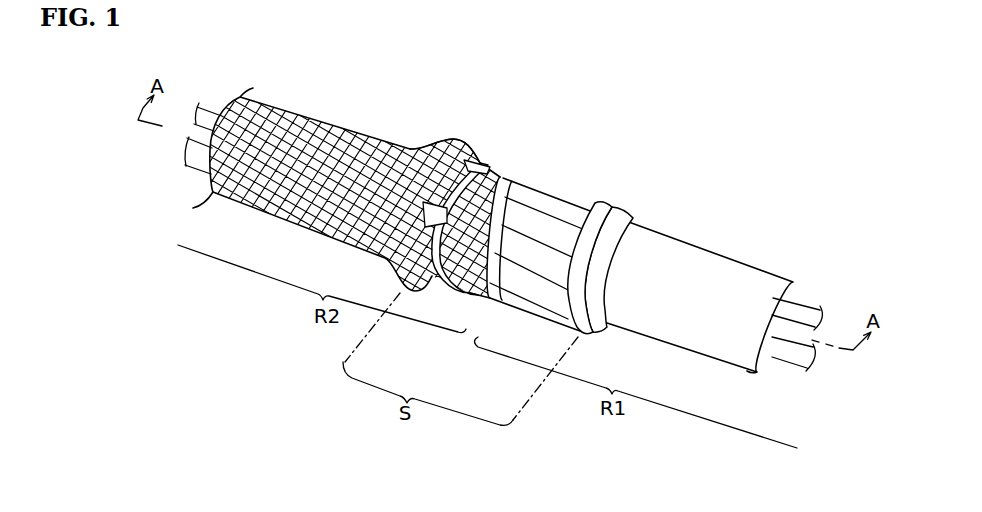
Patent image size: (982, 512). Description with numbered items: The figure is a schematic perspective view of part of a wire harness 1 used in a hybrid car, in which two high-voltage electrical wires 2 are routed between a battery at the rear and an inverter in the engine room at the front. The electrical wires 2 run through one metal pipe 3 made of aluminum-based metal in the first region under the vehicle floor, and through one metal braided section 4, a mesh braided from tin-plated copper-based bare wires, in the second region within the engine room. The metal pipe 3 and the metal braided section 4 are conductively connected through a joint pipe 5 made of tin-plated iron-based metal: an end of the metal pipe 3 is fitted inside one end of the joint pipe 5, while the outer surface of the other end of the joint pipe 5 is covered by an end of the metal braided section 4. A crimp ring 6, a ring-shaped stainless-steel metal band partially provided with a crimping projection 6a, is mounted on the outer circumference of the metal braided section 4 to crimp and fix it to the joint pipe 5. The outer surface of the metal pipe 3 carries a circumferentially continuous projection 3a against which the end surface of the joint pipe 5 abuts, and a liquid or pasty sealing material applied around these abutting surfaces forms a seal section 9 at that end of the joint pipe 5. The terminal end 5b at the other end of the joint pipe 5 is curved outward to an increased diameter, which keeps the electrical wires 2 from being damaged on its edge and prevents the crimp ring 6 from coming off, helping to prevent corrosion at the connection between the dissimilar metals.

The wire harness 1 is at (116, 181).
The high-voltage electrical wires 2 is at (200, 157).
The metal pipe 3 is at (720, 239).
The projection 3a is at (636, 217).
The metal braided section 4 is at (362, 120).
The joint pipe 5 is at (562, 185).
The terminal end 5b is at (418, 148).
The crimp ring 6 is at (482, 162).
The crimping projection 6a is at (460, 140).
The seal section 9 is at (614, 206).